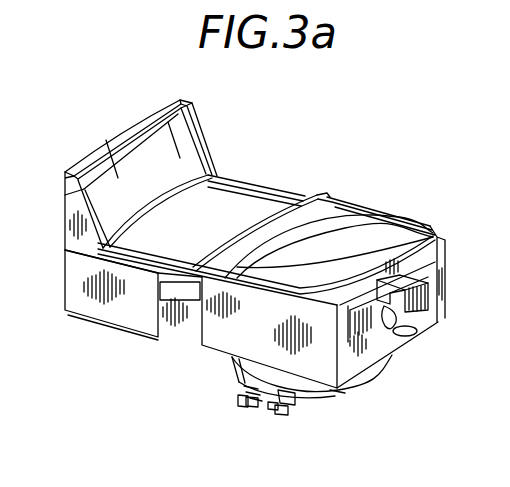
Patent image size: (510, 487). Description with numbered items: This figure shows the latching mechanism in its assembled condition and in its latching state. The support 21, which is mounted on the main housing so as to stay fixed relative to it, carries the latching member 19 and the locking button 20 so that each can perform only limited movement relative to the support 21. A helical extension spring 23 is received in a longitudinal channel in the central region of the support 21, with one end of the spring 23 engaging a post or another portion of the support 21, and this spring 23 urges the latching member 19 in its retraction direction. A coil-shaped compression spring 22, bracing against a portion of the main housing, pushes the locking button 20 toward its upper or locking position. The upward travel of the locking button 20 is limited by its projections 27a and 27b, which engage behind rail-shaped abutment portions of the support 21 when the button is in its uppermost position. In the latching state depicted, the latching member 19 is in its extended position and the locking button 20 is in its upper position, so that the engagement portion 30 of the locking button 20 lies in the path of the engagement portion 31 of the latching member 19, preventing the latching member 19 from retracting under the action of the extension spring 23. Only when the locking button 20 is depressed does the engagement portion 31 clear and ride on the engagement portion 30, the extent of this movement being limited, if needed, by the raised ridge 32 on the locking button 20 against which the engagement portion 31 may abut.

The latching member 19 is at (232, 215).
The locking button 20 is at (363, 232).
The support 21 is at (422, 268).
The coil-shaped compression spring 22 is at (380, 378).
The helical extension spring 23 is at (410, 331).
The projection 27a is at (440, 322).
The projection 27b is at (338, 393).
The engagement portion 30 is at (210, 260).
The engagement portion 31 is at (178, 235).
The raised ridge 32 is at (313, 220).